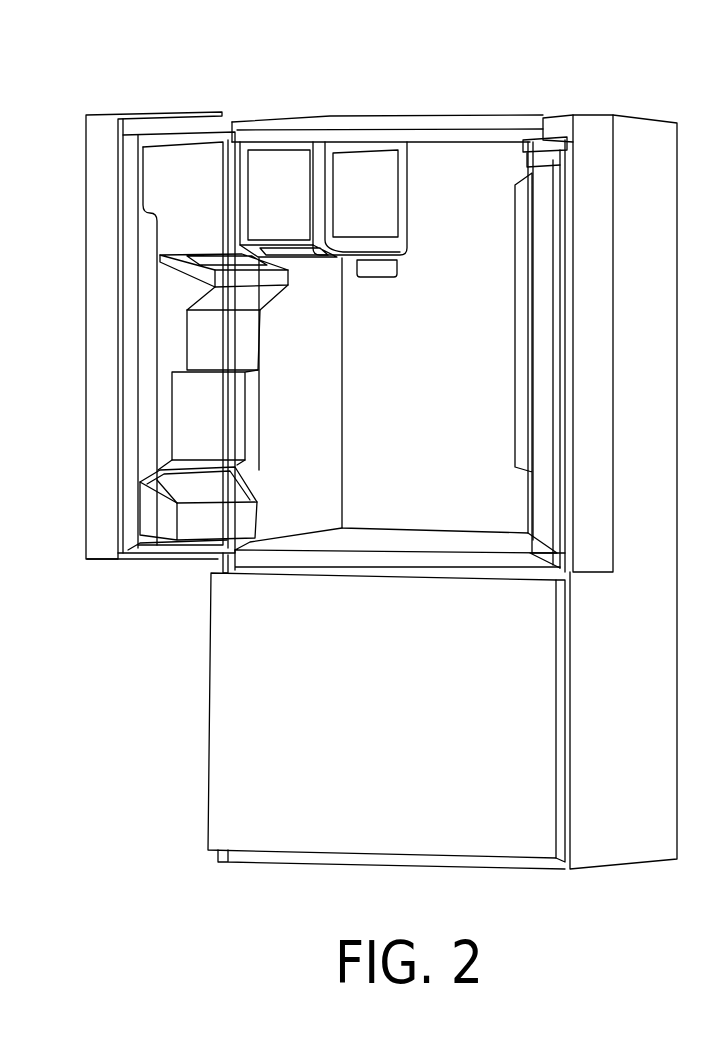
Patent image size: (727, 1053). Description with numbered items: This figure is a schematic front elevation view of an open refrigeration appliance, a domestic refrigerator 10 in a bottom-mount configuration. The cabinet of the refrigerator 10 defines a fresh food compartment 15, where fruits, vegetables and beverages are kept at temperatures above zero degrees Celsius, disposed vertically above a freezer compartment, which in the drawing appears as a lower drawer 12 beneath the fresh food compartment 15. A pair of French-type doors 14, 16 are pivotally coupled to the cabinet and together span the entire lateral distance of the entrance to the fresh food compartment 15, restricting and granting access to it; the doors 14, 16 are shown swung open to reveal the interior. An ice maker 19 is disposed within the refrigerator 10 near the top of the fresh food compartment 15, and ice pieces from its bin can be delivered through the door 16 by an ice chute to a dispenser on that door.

The refrigerator 10 is at (528, 97).
The freezer drawer 12 is at (255, 703).
The door 14 is at (87, 360).
The fresh food compartment 15 is at (432, 462).
The door 16 is at (598, 323).
The ice maker 19 is at (383, 207).